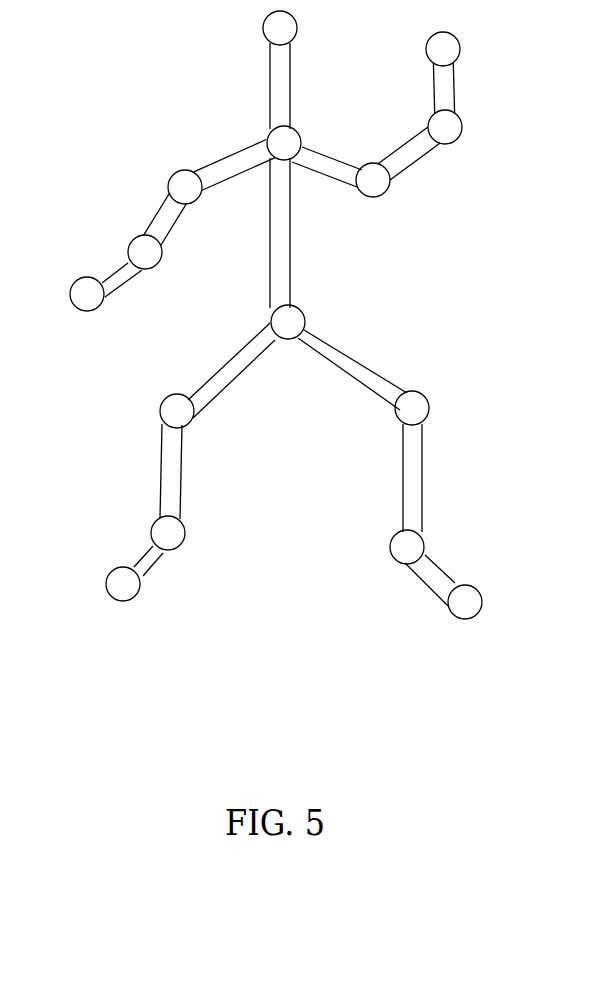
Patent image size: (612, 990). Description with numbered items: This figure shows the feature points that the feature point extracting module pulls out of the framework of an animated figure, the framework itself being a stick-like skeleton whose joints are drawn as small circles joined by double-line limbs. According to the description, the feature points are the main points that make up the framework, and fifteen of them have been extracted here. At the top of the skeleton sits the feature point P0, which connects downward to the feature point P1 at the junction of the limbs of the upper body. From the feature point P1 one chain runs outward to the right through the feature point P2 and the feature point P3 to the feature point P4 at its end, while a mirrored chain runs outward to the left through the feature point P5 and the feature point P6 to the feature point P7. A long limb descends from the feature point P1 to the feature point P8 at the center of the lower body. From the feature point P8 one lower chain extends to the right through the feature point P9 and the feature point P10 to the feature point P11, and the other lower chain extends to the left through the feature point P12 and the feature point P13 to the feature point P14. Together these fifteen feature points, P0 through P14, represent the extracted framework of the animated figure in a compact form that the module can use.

The feature point P0 is at (296, 23).
The feature point P1 is at (298, 101).
The feature point P2 is at (341, 185).
The feature point P3 is at (438, 145).
The feature point P4 is at (462, 73).
The feature point P5 is at (213, 172).
The feature point P6 is at (147, 232).
The feature point P7 is at (92, 287).
The feature point P8 is at (306, 248).
The feature point P9 is at (385, 377).
The feature point P10 is at (435, 494).
The feature point P11 is at (468, 587).
The feature point P12 is at (191, 375).
The feature point P13 is at (141, 487).
The feature point P14 is at (110, 573).